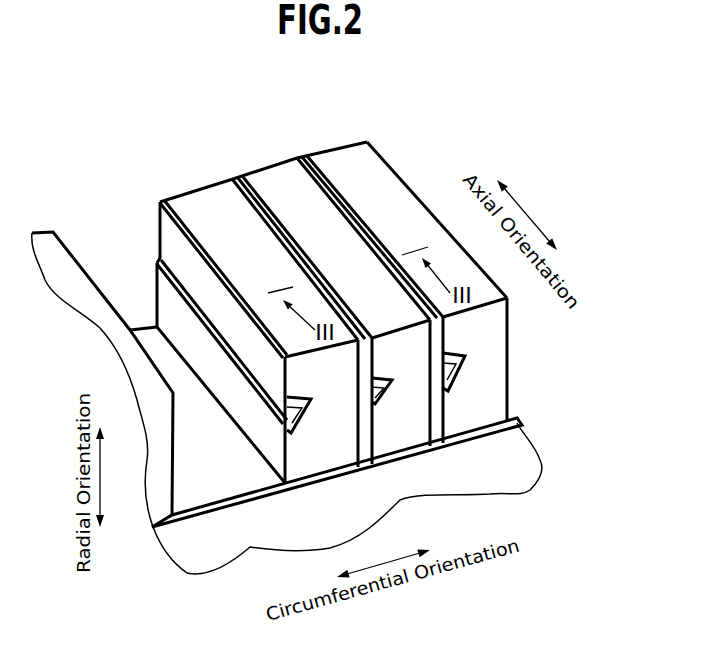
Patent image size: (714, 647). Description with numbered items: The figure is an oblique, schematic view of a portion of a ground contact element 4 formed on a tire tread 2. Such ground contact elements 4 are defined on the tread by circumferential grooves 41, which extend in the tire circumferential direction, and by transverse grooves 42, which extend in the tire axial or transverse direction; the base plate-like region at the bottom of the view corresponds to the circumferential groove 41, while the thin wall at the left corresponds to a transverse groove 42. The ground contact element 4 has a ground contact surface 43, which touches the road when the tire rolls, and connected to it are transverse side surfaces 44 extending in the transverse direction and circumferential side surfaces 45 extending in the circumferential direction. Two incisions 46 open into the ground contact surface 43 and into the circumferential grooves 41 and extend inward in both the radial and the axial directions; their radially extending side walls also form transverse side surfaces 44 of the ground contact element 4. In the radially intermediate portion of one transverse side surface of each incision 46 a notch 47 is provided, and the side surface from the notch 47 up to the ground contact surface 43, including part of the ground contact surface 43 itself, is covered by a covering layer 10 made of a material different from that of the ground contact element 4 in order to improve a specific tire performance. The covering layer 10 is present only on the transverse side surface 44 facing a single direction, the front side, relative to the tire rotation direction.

The tire tread 2 is at (157, 150).
The ground contact element 4 is at (352, 140).
The covering layer 10 is at (322, 151).
The circumferential groove 41 is at (477, 467).
The transverse groove 42 is at (102, 263).
The ground contact surface 43 is at (380, 212).
The transverse side surface 44 is at (247, 402).
The circumferential side surface 45 is at (472, 385).
The incision 46 is at (233, 179).
The notch 47 is at (362, 395).